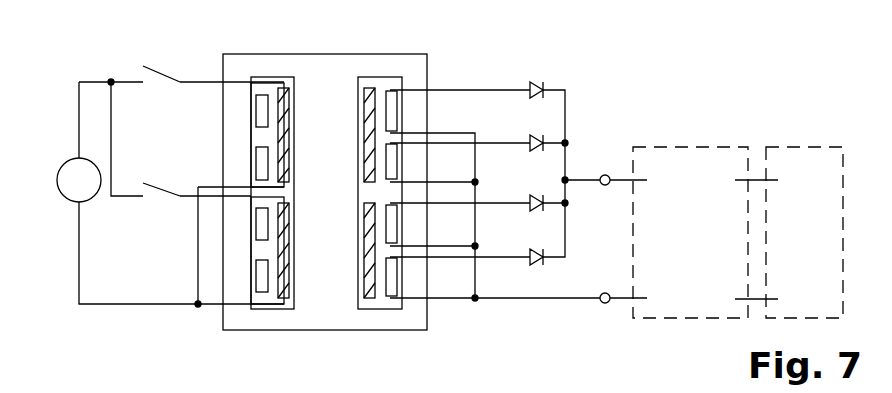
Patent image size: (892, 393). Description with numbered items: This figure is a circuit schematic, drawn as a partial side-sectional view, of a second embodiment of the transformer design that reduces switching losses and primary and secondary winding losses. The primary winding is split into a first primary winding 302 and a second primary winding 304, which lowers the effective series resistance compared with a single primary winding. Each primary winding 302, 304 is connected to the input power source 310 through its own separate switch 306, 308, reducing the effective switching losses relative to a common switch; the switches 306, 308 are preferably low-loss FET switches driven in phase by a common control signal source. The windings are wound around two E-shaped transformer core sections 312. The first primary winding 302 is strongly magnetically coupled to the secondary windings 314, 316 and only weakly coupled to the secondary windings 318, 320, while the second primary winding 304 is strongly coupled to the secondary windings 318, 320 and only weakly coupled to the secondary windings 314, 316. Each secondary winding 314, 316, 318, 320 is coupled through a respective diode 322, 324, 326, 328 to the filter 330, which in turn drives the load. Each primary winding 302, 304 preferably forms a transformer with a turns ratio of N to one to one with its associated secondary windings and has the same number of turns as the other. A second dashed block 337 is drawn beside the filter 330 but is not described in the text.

The first primary winding 302 is at (358, 107).
The second primary winding 304 is at (358, 254).
The switch 306 is at (158, 86).
The switch 308 is at (158, 201).
The input power source 310 is at (72, 203).
The E-shaped transformer core sections 312 is at (340, 60).
The secondary winding 314 is at (398, 103).
The secondary winding 316 is at (398, 148).
The secondary winding 318 is at (398, 218).
The secondary winding 320 is at (398, 272).
The diode 322 is at (543, 82).
The diode 324 is at (528, 138).
The diode 326 is at (528, 200).
The diode 328 is at (528, 253).
The filter 330 is at (688, 143).
The output circuit 337 is at (805, 143).